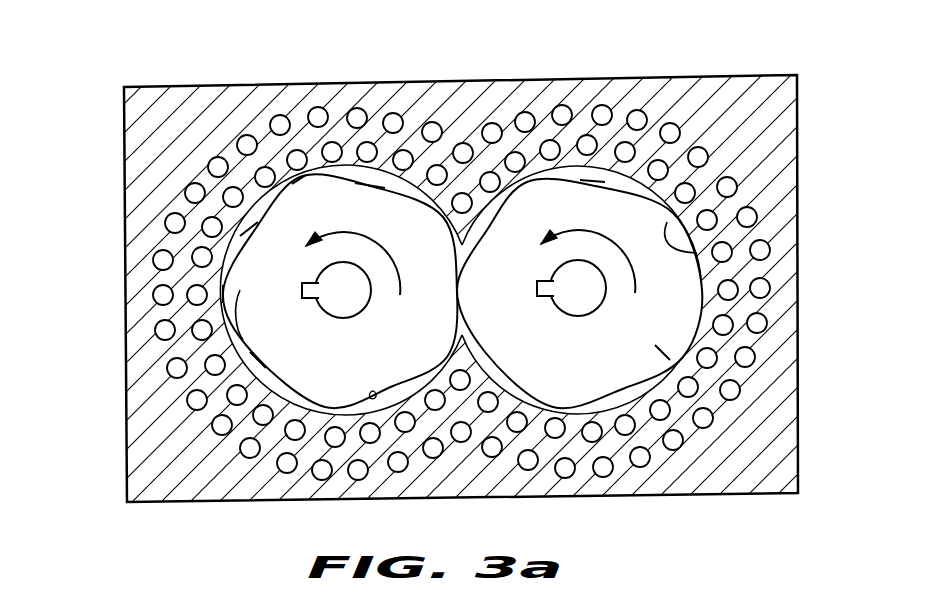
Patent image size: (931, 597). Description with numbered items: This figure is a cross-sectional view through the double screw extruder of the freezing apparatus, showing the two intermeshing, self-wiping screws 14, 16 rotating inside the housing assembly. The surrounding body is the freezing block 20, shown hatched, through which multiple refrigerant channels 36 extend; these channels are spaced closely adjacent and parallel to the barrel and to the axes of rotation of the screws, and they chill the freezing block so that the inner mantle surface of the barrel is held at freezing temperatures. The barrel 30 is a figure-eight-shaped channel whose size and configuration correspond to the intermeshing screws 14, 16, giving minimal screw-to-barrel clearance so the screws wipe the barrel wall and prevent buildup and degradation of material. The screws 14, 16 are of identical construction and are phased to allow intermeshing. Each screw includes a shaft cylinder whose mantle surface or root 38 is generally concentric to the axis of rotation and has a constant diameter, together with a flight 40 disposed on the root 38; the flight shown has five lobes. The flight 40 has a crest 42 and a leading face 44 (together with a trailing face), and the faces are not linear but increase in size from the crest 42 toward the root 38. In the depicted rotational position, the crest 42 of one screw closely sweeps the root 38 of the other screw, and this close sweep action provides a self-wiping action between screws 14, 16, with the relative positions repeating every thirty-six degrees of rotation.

The screw 14 is at (323, 380).
The screw 16 is at (603, 373).
The freezing block 20 is at (531, 78).
The barrel 30 is at (373, 396).
The refrigerant channels 36 is at (700, 155).
The root 38 is at (370, 187).
The flight 40 is at (653, 348).
The crest 42 is at (300, 177).
The leading face 44 is at (697, 253).